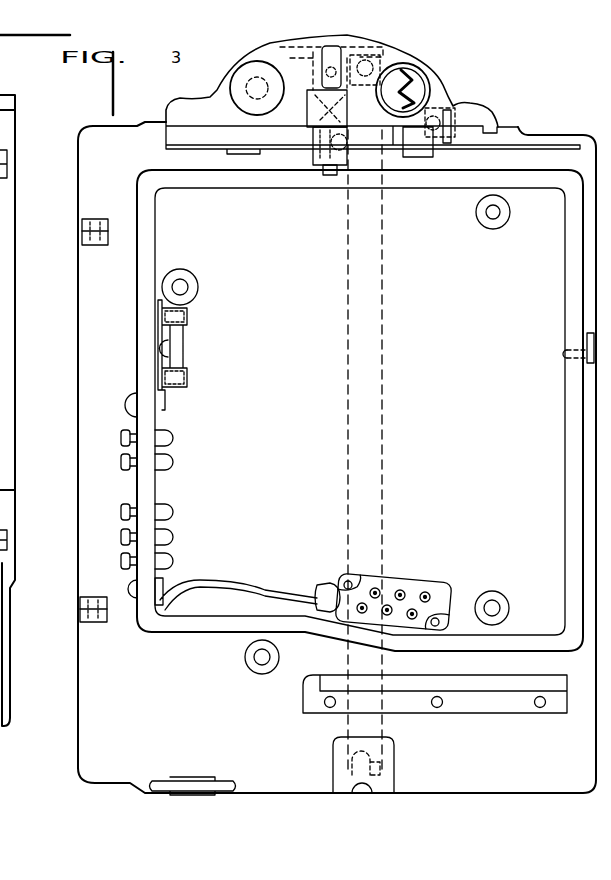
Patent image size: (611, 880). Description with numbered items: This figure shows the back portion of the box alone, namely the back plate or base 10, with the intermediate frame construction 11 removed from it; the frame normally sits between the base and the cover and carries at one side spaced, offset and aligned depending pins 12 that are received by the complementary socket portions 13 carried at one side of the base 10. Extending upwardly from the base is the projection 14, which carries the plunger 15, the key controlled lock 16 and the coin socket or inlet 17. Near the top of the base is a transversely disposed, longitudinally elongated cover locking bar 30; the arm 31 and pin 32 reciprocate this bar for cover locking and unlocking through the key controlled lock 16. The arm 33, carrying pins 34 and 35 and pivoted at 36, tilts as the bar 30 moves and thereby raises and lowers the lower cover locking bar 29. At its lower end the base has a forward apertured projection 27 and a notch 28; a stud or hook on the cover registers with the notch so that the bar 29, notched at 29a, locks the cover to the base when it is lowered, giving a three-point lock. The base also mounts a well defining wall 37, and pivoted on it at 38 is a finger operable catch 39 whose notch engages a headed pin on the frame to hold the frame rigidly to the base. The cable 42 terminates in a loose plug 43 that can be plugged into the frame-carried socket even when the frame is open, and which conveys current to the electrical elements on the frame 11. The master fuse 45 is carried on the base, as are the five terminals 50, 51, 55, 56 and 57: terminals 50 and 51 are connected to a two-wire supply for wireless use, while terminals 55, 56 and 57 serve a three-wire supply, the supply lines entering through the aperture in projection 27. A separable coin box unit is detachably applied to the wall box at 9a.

The coin box attachment point 9a is at (500, 706).
The back plate or base 10 is at (89, 366).
The intermediate frame construction 11 is at (9, 318).
The depending pins 12 is at (10, 157).
The socket portions 13 is at (82, 232).
The projection 14 is at (217, 99).
The plunger 15 is at (312, 60).
The key controlled lock 16 is at (412, 116).
The coin socket or inlet 17 is at (249, 78).
The apertured projection 27 is at (193, 784).
The notch 28 is at (360, 790).
The cover locking bar 29 is at (386, 447).
The notch of bar 29 29a is at (386, 767).
The cover locking bar 30 is at (447, 146).
The arm 31 is at (445, 100).
The pin 32 is at (445, 118).
The arm 33 is at (313, 126).
The pin 34 is at (340, 150).
The pin 35 is at (390, 48).
The pivot 36 is at (307, 98).
The well defining wall 37 is at (568, 498).
The pivot 38 is at (563, 358).
The finger operable catch 39 is at (582, 333).
The cable 42 is at (249, 586).
The loose plug 43 is at (440, 596).
The master fuse 45 is at (180, 354).
The terminal 50 is at (170, 433).
The terminal 51 is at (172, 462).
The terminal 55 is at (172, 512).
The terminal 56 is at (172, 537).
The terminal 57 is at (172, 561).